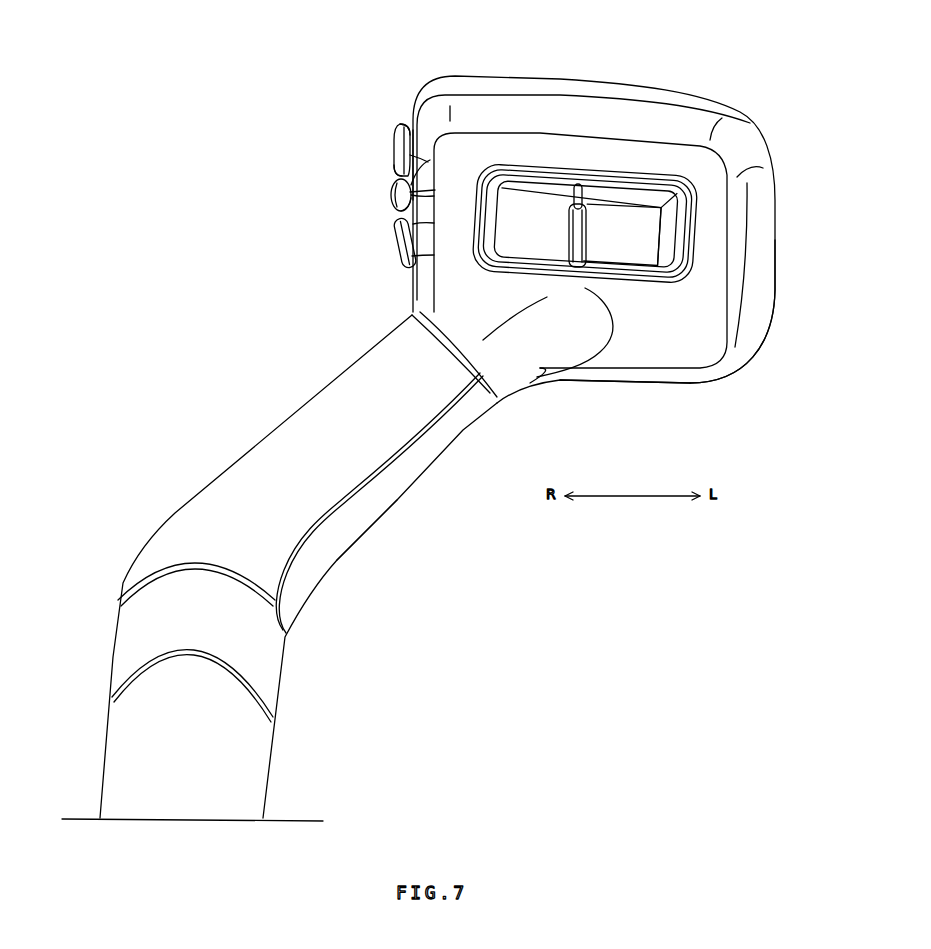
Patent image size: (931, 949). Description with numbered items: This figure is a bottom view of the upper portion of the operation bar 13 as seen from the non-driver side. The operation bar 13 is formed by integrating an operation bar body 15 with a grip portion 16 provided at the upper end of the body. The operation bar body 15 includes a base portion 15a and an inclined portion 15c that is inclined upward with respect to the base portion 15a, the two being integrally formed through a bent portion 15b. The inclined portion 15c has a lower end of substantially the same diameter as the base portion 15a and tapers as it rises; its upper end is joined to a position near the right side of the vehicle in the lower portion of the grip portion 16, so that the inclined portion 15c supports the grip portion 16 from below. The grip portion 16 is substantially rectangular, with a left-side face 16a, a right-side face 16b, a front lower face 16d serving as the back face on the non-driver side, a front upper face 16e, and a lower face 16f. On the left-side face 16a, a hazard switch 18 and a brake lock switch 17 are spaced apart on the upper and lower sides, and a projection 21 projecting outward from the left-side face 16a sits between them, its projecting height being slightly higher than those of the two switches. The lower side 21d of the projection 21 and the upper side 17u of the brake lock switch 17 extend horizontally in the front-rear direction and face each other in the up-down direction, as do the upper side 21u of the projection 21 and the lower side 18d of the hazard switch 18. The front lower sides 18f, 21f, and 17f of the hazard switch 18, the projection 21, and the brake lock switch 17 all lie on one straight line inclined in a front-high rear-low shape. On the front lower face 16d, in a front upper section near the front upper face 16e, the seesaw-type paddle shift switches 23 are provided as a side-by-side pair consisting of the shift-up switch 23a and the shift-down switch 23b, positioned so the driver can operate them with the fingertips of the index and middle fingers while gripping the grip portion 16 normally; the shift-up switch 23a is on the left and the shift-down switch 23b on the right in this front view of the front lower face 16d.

The operation bar 13 is at (436, 416).
The operation bar body 15 is at (107, 753).
The base portion 15a is at (270, 770).
The bent portion 15b is at (140, 546).
The inclined portion 15c is at (398, 500).
The grip portion 16 is at (516, 72).
The left-side face 16a is at (404, 149).
The right-side face 16b is at (760, 292).
The front lower face 16d is at (718, 253).
The front upper face 16e is at (598, 84).
The lower face 16f is at (612, 382).
The brake lock switch 17 is at (404, 258).
The front lower side 17f is at (417, 255).
The upper side 17u is at (417, 225).
The hazard switch 18 is at (396, 130).
The lower side 18d is at (400, 172).
The front lower side 18f is at (400, 122).
The projection 21 is at (390, 195).
The lower side 21d is at (400, 203).
The front lower side 21f is at (417, 197).
The upper side 21u is at (418, 165).
The paddle shift switches 23 is at (586, 185).
The shift-up switch 23a is at (529, 248).
The shift-down switch 23b is at (632, 258).